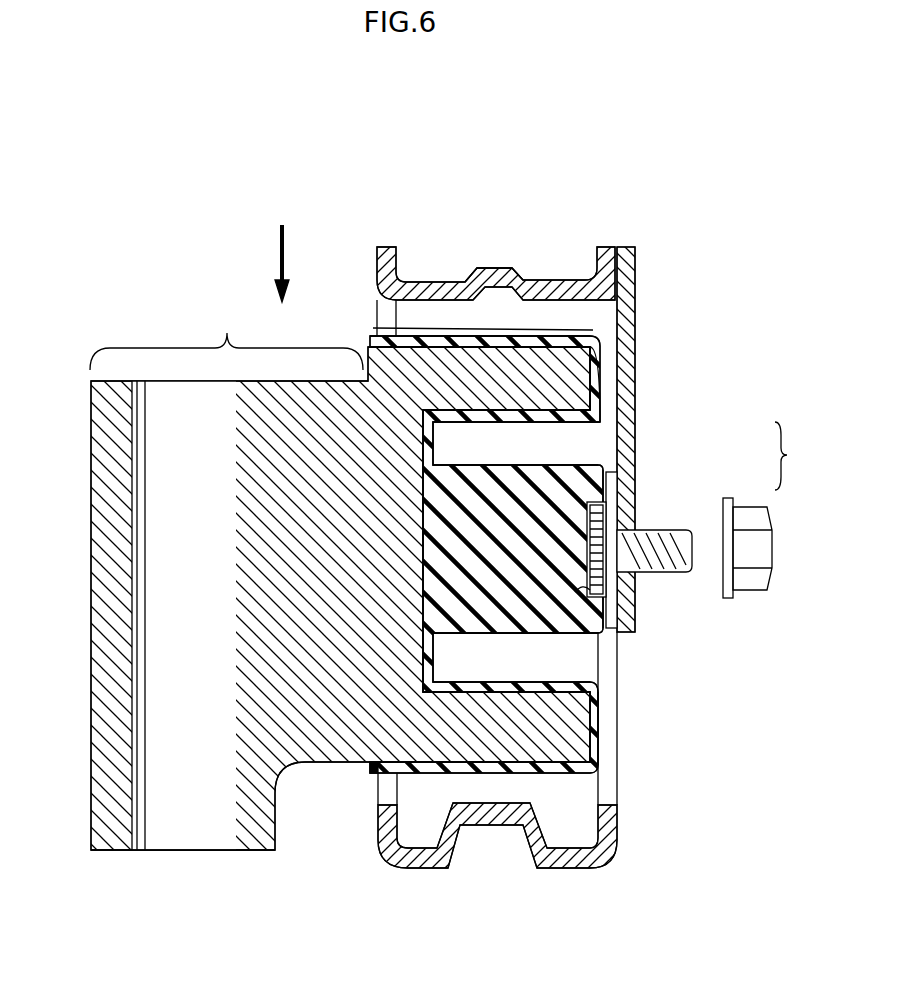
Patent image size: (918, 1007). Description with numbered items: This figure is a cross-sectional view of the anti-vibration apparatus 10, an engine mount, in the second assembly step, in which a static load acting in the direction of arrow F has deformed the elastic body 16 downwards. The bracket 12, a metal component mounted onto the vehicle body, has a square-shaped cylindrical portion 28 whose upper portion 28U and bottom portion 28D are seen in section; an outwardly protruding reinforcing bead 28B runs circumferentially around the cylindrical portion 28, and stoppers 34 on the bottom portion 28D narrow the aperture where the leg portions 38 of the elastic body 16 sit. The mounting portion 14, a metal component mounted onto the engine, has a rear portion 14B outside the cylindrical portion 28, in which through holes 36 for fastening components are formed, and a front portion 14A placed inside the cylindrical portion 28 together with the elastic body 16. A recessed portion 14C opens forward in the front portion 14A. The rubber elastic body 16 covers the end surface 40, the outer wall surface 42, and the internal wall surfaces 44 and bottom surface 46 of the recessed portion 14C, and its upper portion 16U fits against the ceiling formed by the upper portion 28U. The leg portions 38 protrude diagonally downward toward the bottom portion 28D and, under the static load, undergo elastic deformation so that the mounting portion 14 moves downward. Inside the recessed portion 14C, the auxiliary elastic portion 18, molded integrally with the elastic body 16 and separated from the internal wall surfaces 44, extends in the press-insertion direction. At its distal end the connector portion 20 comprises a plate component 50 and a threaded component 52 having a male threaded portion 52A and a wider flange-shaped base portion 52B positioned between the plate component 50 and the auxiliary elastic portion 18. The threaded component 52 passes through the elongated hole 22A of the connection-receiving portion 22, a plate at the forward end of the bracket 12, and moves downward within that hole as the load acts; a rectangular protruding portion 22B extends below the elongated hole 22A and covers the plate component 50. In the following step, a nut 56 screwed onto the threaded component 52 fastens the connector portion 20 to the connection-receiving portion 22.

The anti-vibration apparatus 10 is at (222, 128).
The bracket 12 is at (517, 168).
The mounting portion 14 is at (172, 306).
The front portion 14A is at (597, 331).
The rear portion 14B is at (226, 339).
The recessed portion 14C is at (587, 436).
The elastic body 16 is at (637, 332).
The upper portion of the elastic body 16U is at (473, 336).
The auxiliary elastic portion 18 is at (562, 640).
The connector portion 20 is at (694, 537).
The connection-receiving portion 22 is at (600, 337).
The elongated hole 22A is at (617, 497).
The protruding portion 22B is at (635, 633).
The cylindrical portion 28 is at (385, 247).
The upper portion of the cylindrical portion 28U is at (570, 282).
The reinforcing bead 28B is at (500, 268).
The bottom portion of the cylindrical portion 28D is at (492, 780).
The stopper 34 is at (390, 805).
The through hole 36 is at (197, 835).
The leg portion 38 is at (395, 787).
The end surface 40 is at (603, 376).
The outer wall surface 42 is at (530, 336).
The internal wall surface 44 is at (503, 410).
The bottom surface 46 is at (432, 645).
The plate component 50 is at (635, 482).
The threaded component 52 is at (655, 528).
The male threaded portion 52A is at (667, 573).
The base portion 52B is at (575, 592).
The nut 56 is at (760, 590).